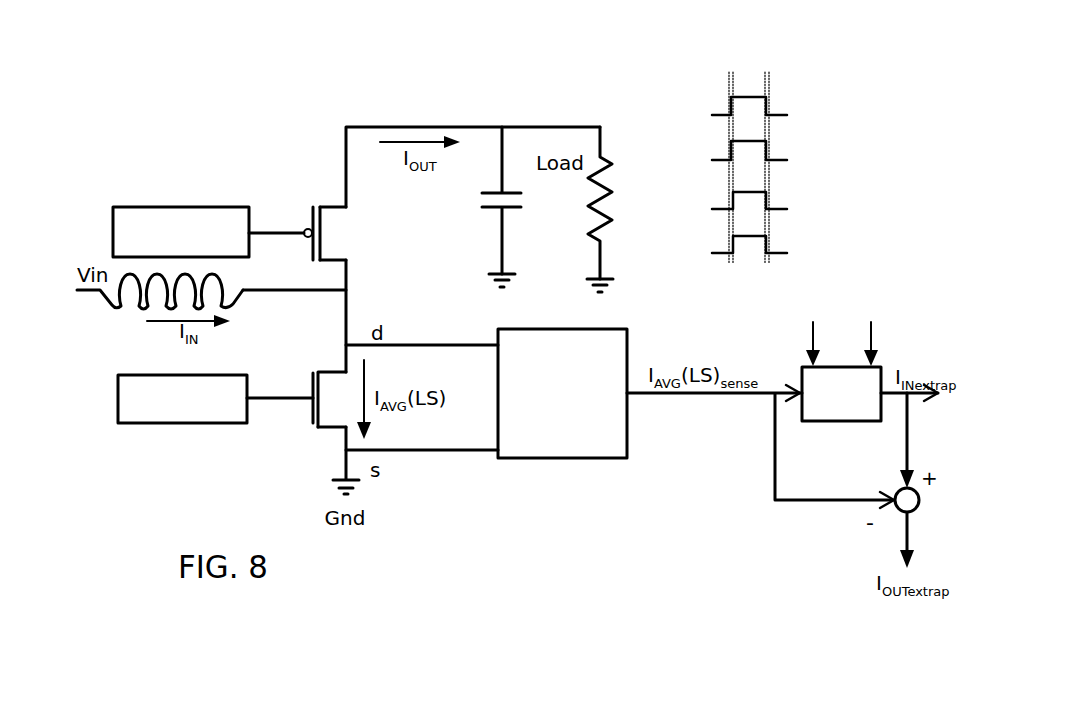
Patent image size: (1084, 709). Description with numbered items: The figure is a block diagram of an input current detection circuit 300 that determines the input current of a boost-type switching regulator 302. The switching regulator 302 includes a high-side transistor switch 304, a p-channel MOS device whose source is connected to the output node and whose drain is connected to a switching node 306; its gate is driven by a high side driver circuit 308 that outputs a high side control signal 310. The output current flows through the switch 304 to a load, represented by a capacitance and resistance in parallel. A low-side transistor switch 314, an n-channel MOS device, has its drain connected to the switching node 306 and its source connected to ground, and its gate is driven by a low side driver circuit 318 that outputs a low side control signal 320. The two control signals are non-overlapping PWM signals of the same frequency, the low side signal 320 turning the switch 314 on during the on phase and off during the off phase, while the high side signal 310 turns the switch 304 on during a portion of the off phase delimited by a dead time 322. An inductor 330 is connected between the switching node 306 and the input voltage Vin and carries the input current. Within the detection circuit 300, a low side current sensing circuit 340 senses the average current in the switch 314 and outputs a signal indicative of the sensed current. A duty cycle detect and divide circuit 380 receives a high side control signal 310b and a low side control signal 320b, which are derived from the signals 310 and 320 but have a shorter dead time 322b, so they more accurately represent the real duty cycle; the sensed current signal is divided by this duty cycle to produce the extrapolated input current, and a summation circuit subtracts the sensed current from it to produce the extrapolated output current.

The input current detection circuit 300 is at (632, 508).
The switching regulator 302 is at (210, 150).
The high-side transistor switch 304 is at (313, 204).
The switching node 306 is at (348, 305).
The high side driver circuit 308 is at (168, 207).
The high side control signal 310 is at (267, 228).
The low-side transistor switch 314 is at (317, 430).
The low side driver circuit 318 is at (155, 423).
The low side control signal 320 is at (272, 400).
The dead time 322 is at (730, 72).
The shorter dead time 322b is at (730, 263).
The high side control signal 310b is at (746, 300).
The low side control signal 320b is at (780, 278).
The inductor 330 is at (116, 305).
The low side current sensing circuit 340 is at (542, 458).
The duty cycle detect and divide circuit 380 is at (820, 421).